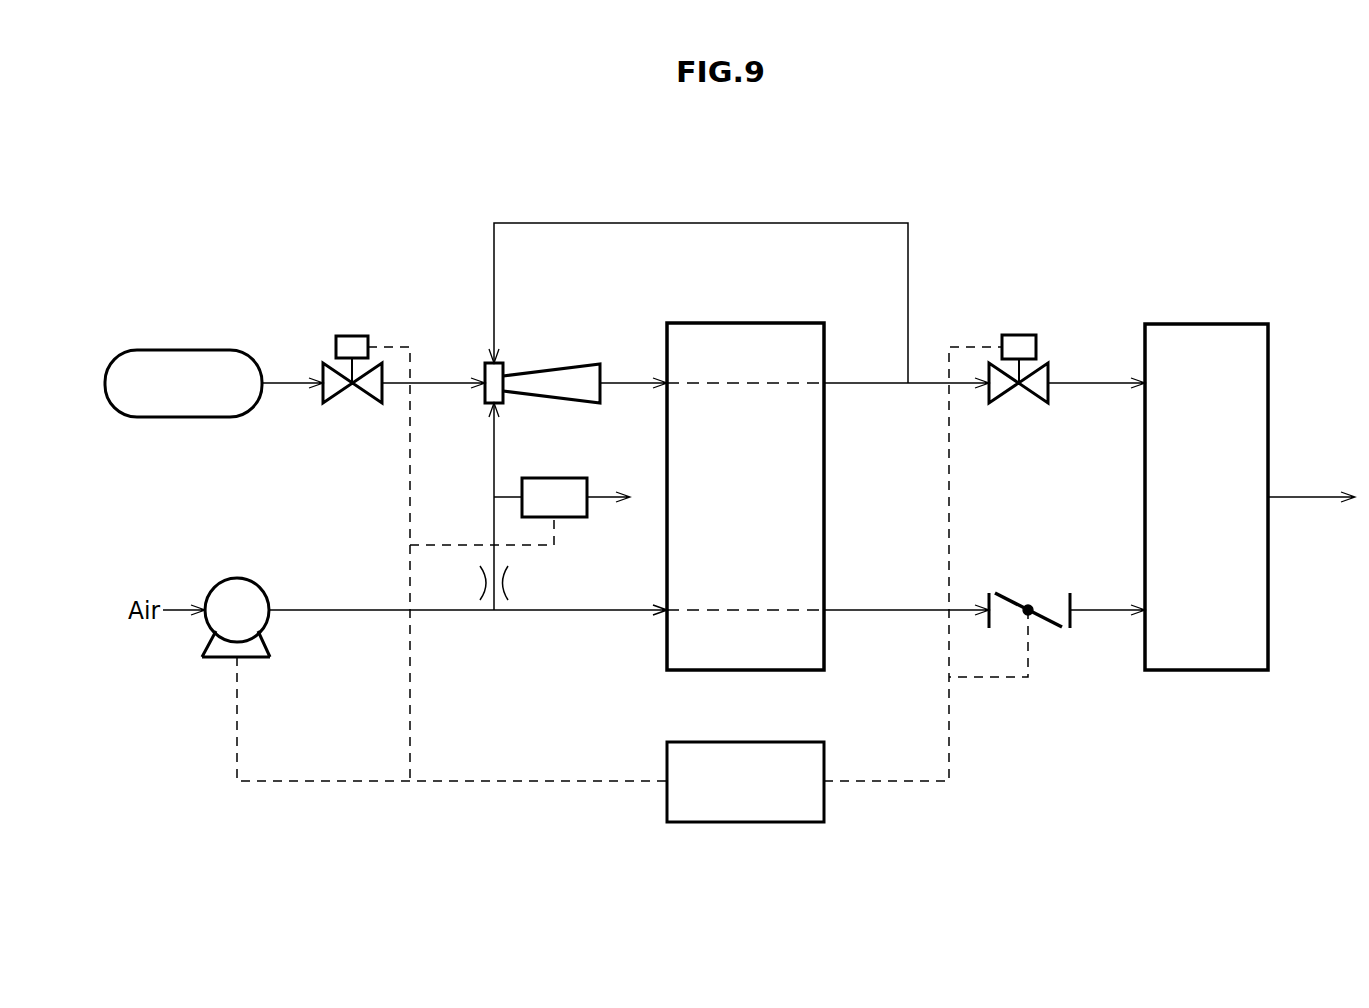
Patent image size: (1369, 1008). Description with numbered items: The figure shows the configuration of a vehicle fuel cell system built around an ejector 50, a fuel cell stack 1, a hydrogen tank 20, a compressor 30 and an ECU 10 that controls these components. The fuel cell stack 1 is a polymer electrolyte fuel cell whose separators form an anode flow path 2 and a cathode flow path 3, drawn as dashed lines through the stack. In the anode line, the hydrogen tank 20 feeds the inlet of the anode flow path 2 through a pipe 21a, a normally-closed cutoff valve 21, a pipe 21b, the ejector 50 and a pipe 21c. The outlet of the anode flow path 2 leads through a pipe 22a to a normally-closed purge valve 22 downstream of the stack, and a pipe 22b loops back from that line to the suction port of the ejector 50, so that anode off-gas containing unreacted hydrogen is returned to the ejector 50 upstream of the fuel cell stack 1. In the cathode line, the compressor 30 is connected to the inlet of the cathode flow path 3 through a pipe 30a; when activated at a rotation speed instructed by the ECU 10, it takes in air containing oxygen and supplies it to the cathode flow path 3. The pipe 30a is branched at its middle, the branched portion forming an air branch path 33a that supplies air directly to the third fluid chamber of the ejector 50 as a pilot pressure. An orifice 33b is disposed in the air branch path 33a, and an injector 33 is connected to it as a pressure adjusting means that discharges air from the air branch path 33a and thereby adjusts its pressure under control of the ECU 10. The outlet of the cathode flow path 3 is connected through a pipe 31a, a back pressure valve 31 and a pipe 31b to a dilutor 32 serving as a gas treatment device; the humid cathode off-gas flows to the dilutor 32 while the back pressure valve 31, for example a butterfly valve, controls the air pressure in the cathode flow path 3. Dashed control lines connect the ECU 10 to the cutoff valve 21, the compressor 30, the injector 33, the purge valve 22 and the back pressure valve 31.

The fuel cell stack 1 is at (745, 323).
The anode flow path 2 is at (718, 383).
The cathode flow path 3 is at (718, 610).
The ECU 10 is at (745, 822).
The hydrogen tank 20 is at (183, 350).
The cutoff valve 21 is at (351, 336).
The pipe 21a is at (285, 383).
The pipe 21b is at (441, 383).
The pipe 21c is at (625, 383).
The purge valve 22 is at (1019, 335).
The pipe 22a is at (859, 383).
The pipe 22b is at (700, 223).
The compressor 30 is at (237, 578).
The pipe 30a is at (323, 610).
The back pressure valve 31 is at (1008, 596).
The pipe 31a is at (869, 610).
The pipe 31b is at (1101, 610).
The dilutor 32 is at (1206, 324).
The injector 33 is at (560, 478).
The air branch path 33a is at (494, 521).
The orifice 33b is at (506, 582).
The ejector 50 is at (546, 350).